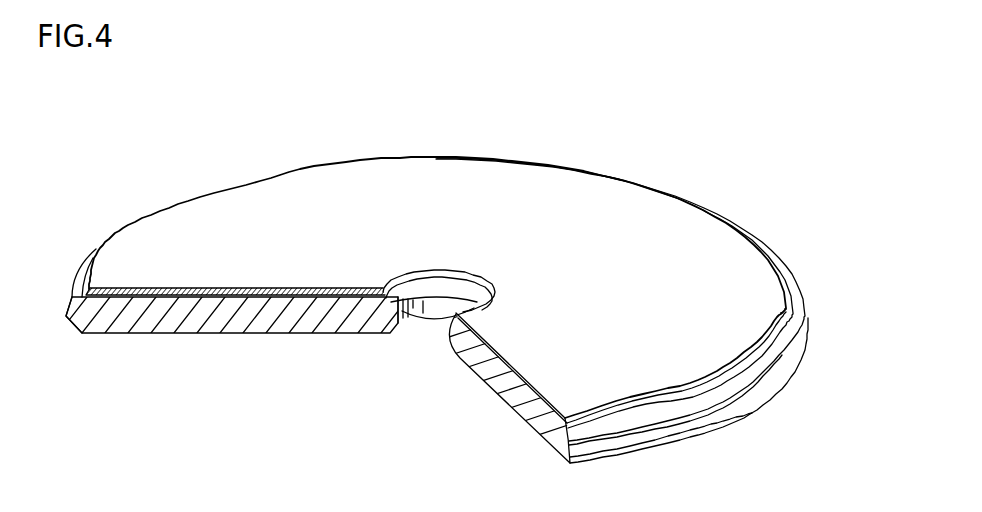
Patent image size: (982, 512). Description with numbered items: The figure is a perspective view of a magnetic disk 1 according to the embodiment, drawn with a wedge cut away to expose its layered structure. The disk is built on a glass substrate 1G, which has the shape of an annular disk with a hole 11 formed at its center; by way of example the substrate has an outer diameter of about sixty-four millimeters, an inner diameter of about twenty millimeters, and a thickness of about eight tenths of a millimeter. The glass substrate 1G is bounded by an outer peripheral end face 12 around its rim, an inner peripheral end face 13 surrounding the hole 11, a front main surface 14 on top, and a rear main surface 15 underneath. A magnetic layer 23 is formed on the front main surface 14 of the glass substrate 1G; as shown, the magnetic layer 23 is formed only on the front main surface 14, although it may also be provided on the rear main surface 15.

The magnetic disk 1 is at (657, 114).
The hole 11 is at (432, 323).
The outer peripheral end face 12 is at (66, 316).
The inner peripheral end face 13 is at (405, 320).
The front main surface 14 is at (206, 298).
The rear main surface 15 is at (137, 334).
The magnetic layer 23 is at (675, 225).
The glass substrate 1G is at (802, 307).